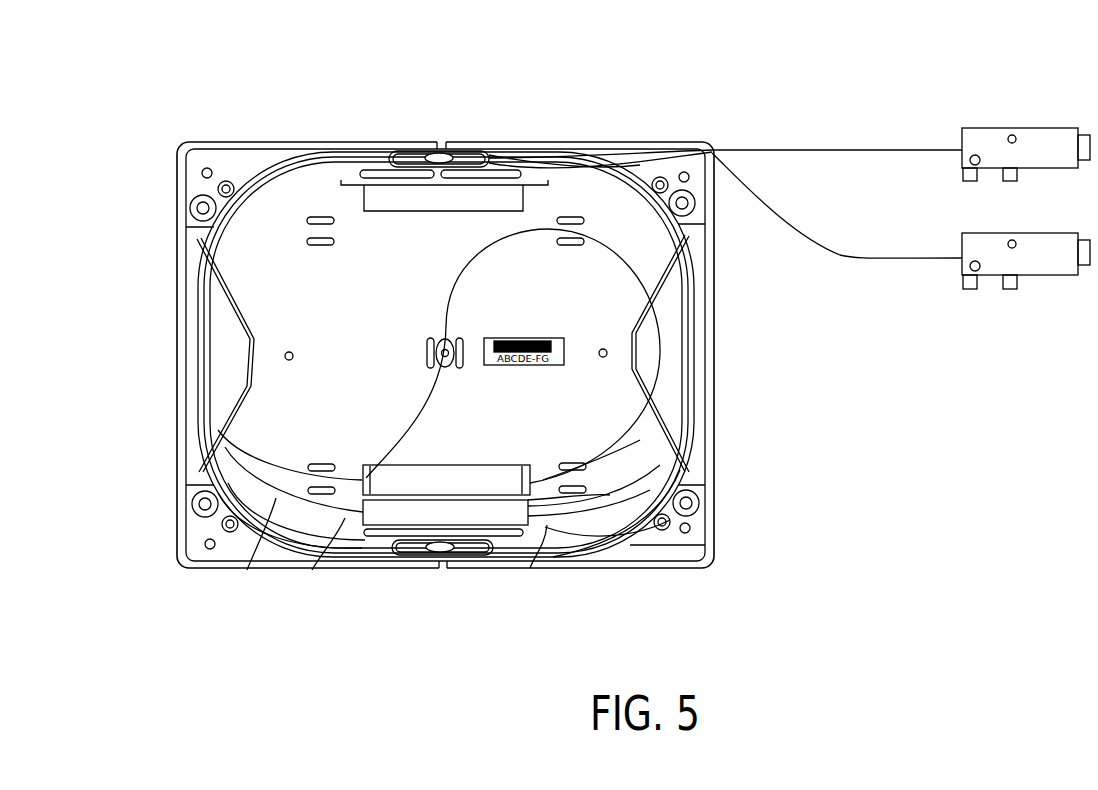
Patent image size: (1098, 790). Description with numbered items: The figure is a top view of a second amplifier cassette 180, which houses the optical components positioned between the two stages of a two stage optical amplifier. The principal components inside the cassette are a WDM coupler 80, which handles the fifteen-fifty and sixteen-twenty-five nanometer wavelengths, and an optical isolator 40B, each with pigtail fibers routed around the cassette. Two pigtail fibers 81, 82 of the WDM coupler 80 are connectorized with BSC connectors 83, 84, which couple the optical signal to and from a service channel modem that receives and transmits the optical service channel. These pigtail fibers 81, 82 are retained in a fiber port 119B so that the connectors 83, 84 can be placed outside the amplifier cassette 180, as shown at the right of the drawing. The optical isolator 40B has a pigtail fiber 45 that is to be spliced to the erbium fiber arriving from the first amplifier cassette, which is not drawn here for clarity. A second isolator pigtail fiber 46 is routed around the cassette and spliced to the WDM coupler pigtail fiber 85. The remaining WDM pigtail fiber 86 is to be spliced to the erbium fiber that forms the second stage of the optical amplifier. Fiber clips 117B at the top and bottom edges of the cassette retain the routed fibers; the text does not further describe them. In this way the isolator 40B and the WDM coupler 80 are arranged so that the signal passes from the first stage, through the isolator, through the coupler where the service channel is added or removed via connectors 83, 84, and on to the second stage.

The amplifier cassette 180 is at (355, 101).
The fiber retaining clip 117B is at (438, 146).
The fiber port 119B is at (712, 150).
The BSC connector 83 is at (1045, 140).
The BSC connector 84 is at (1052, 268).
The second isolator pigtail fiber 46 is at (355, 465).
The optical isolator 40B is at (515, 470).
The pigtail fiber 45 is at (543, 480).
The WDM pigtail fiber 86 is at (592, 508).
The 1550/1625 WDM coupler 80 is at (390, 531).
The WDM coupler pigtail fiber 85 is at (247, 570).
The pigtail fiber 82 is at (312, 570).
The pigtail fiber 81 is at (530, 568).